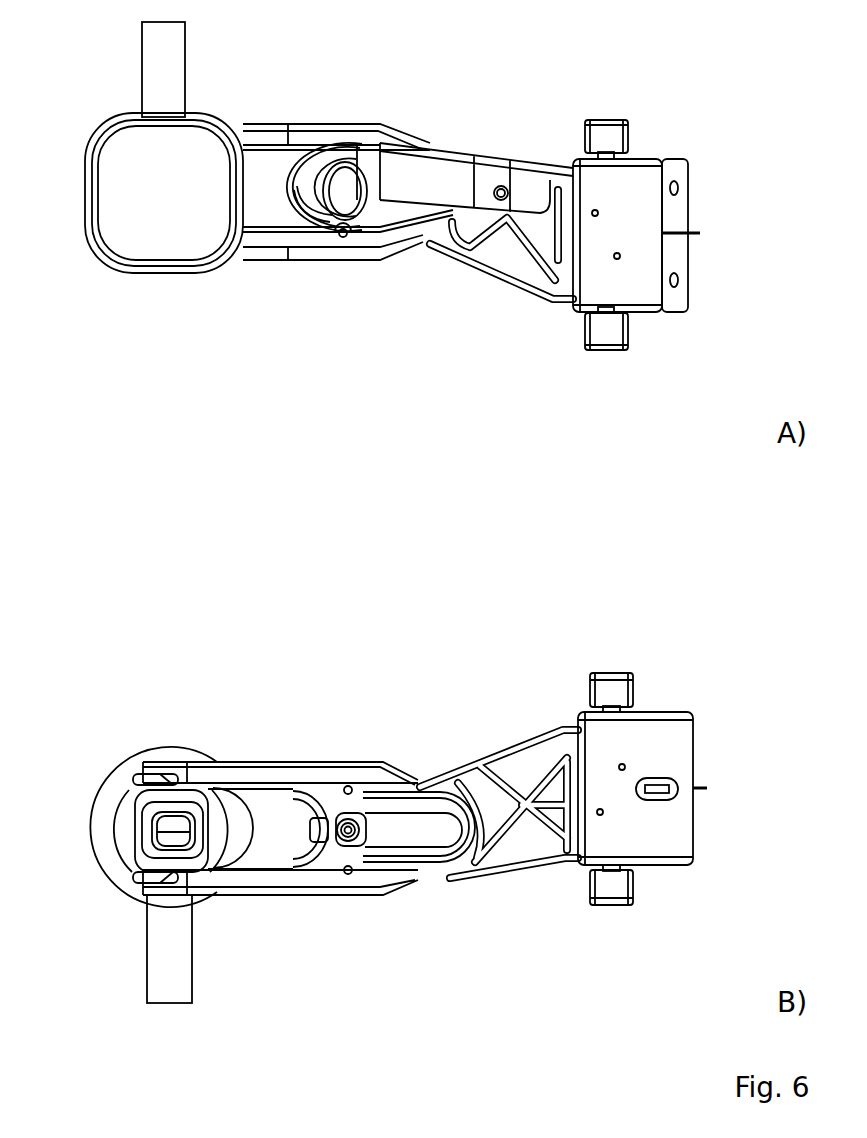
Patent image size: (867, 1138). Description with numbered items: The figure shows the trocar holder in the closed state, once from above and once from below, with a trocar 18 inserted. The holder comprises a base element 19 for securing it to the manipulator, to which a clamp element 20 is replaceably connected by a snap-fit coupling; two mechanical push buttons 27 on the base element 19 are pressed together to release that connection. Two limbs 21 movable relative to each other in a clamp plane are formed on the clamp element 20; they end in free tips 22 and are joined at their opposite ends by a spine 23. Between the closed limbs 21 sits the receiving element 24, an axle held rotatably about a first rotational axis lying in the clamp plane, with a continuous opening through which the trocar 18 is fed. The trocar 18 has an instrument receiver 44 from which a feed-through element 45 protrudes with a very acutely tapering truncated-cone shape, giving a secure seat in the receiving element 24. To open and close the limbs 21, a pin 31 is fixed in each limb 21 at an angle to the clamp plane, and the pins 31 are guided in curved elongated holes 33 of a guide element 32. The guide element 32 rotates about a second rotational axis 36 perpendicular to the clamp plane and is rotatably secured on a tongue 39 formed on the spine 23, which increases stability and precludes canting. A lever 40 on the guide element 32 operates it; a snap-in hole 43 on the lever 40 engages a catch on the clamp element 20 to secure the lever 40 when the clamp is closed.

In FIG. 6A, the trocar 18 is at (92, 148).
In FIG. 6B, the trocar 18 is at (105, 790).
In FIG. 6A, the base element 19 is at (640, 185).
In FIG. 6B, the base element 19 is at (660, 735).
In FIG. 6A, the clamp element 20 is at (508, 287).
In FIG. 6B, the clamp element 20 is at (500, 740).
In FIG. 6A, the limbs 21 is at (272, 128).
In FIG. 6B, the limbs 21 is at (237, 775).
In FIG. 6B, the free tips 22 is at (138, 775).
In FIG. 6B, the spine 23 is at (500, 855).
In FIG. 6B, the receiving element 24 is at (140, 830).
In FIG. 6A, the mechanical push buttons 27 is at (601, 137).
In FIG. 6B, the mechanical push buttons 27 is at (605, 700).
In FIG. 6A, the pins 31 is at (347, 242).
In FIG. 6B, the pins 31 is at (348, 786).
In FIG. 6A, the guide element 32 is at (318, 165).
In FIG. 6B, the guide element 32 is at (388, 800).
In FIG. 6A, the elongated holes 33 is at (292, 212).
In FIG. 6B, the elongated holes 33 is at (300, 785).
In FIG. 6B, the second rotational axis 36 is at (346, 838).
In FIG. 6B, the tongue 39 is at (432, 840).
In FIG. 6A, the lever 40 is at (425, 170).
In FIG. 6A, the snap-in hole 43 is at (503, 186).
In FIG. 6A, the instrument receiver 44 is at (162, 245).
In FIG. 6B, the feed-through element 45 is at (135, 840).